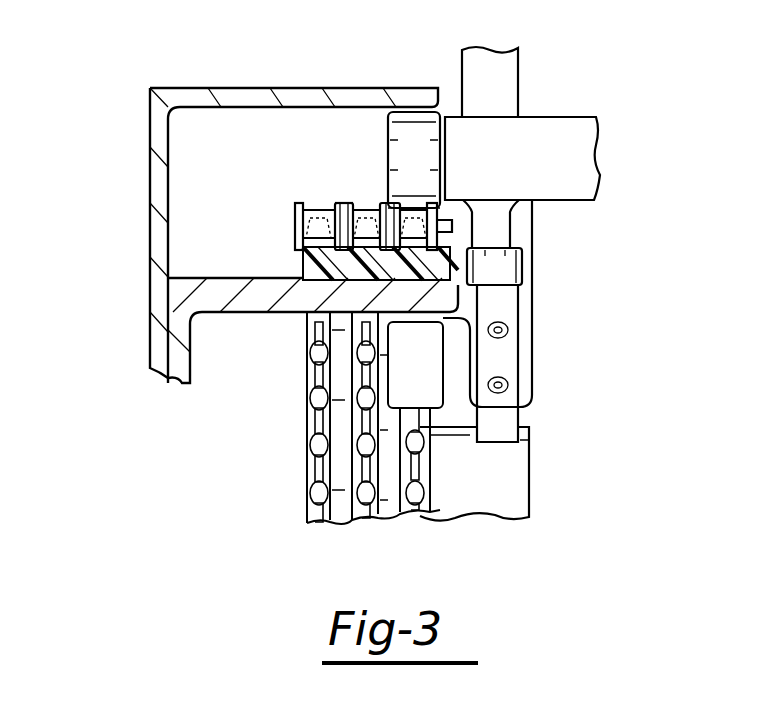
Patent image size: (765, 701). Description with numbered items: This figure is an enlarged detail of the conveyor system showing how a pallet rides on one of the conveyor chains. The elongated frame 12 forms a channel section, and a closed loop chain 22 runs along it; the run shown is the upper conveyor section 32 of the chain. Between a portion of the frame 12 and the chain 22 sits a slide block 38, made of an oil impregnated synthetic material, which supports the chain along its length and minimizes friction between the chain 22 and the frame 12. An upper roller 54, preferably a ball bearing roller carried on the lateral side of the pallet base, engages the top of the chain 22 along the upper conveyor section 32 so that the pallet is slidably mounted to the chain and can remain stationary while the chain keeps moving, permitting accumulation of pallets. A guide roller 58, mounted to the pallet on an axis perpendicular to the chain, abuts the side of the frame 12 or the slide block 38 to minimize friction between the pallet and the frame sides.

The frame 12 is at (150, 265).
The chain 22 is at (320, 203).
The upper conveyor section 32 is at (340, 205).
The slide block 38 is at (267, 313).
The upper roller 54 is at (415, 158).
The guide roller 58 is at (500, 272).